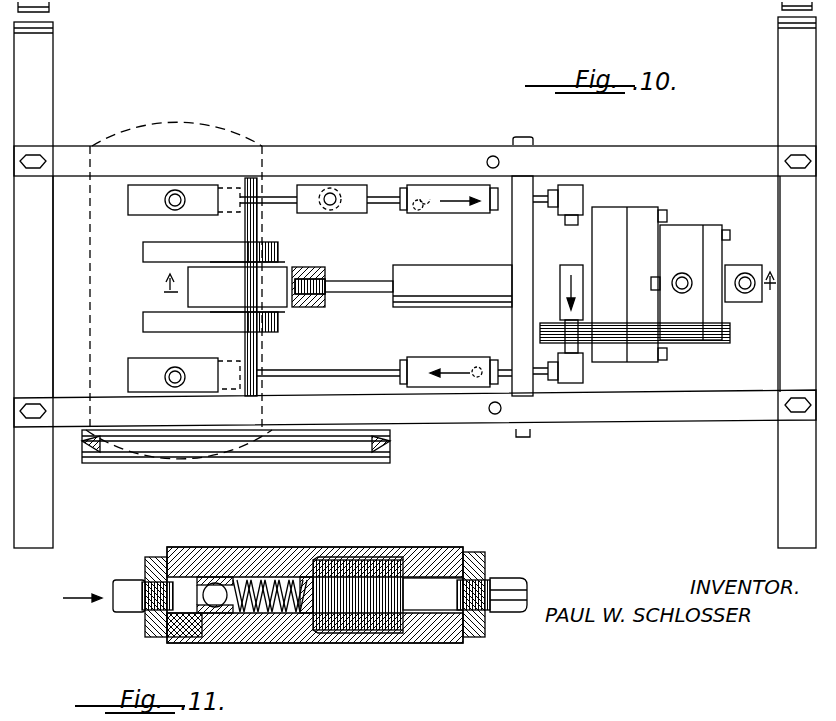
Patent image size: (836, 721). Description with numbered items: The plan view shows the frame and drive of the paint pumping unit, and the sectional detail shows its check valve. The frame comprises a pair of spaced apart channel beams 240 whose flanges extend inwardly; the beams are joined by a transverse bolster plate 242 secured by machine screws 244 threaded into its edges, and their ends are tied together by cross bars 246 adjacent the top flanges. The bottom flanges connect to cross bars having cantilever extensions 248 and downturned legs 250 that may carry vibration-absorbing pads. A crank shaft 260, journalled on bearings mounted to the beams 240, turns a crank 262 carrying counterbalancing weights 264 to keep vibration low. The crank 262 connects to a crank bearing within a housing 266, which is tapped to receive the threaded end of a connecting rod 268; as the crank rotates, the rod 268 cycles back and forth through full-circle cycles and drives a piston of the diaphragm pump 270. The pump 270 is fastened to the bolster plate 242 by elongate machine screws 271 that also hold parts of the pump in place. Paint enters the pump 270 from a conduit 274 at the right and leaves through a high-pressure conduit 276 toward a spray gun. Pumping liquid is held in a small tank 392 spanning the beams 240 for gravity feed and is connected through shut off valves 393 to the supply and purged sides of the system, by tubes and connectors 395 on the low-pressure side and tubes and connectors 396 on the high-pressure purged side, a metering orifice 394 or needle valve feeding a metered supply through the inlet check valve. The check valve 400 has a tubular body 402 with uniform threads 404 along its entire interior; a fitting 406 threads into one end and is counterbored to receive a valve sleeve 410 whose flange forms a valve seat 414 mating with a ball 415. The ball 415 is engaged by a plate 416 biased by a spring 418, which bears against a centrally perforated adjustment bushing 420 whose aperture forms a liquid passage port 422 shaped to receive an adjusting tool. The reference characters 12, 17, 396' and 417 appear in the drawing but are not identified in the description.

In FIG. 10, the direction arrow 12 is at (769, 302).
In FIG. 10, the direction arrow 17 is at (173, 296).
In FIG. 10, the channel beams 240 is at (464, 157).
In FIG. 10, the bolster plate 242 is at (512, 265).
In FIG. 10, the machine screws 244 is at (530, 137).
In FIG. 10, the cross bars 246 is at (53, 310).
In FIG. 10, the cantilever extensions 248 is at (49, 74).
In FIG. 10, the downturned legs 250 is at (45, 24).
In FIG. 10, the crank shaft 260 is at (257, 352).
In FIG. 10, the crank 262 is at (270, 255).
In FIG. 10, the counterbalancing weights 264 is at (143, 250).
In FIG. 10, the housing 266 is at (287, 296).
In FIG. 10, the connecting rod 268 is at (343, 280).
In FIG. 10, the diaphragm pump 270 is at (646, 212).
In FIG. 10, the elongate machine screws 271 is at (548, 198).
In FIG. 10, the conduit 274 is at (748, 272).
In FIG. 10, the high-pressure conduit 276 is at (684, 272).
In FIG. 10, the tank 392 is at (172, 123).
In FIG. 10, the shut off valve 393 is at (146, 193).
In FIG. 10, the metering orifice 394 is at (348, 186).
In FIG. 10, the tubes and connectors 395 is at (280, 192).
In FIG. 10, the tubes and connectors 396 is at (384, 398).
In FIG. 10, the valve body 396' is at (635, 284).
In FIG. 10, the check valve 400 is at (420, 178).
In FIG. 11, the check valve 400 is at (418, 532).
In FIG. 11, the tubular body 402 is at (285, 547).
In FIG. 11, the threads 404 is at (380, 630).
In FIG. 11, the fitting 406 is at (145, 560).
In FIG. 11, the valve sleeve 410 is at (205, 577).
In FIG. 11, the valve seat 414 is at (140, 612).
In FIG. 10, the ball 415 is at (418, 208).
In FIG. 11, the ball 415 is at (217, 583).
In FIG. 11, the plate 416 is at (248, 577).
In FIG. 11, the cap portion 417 is at (167, 635).
In FIG. 11, the spring 418 is at (285, 638).
In FIG. 11, the adjustment bushing 420 is at (320, 560).
In FIG. 11, the liquid passage port 422 is at (322, 630).